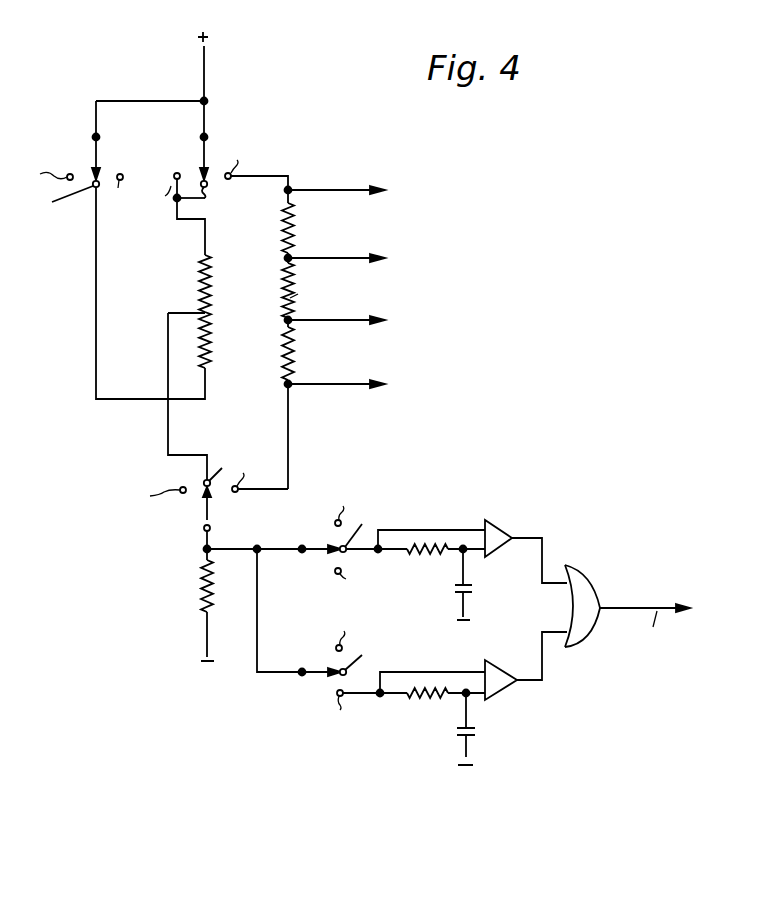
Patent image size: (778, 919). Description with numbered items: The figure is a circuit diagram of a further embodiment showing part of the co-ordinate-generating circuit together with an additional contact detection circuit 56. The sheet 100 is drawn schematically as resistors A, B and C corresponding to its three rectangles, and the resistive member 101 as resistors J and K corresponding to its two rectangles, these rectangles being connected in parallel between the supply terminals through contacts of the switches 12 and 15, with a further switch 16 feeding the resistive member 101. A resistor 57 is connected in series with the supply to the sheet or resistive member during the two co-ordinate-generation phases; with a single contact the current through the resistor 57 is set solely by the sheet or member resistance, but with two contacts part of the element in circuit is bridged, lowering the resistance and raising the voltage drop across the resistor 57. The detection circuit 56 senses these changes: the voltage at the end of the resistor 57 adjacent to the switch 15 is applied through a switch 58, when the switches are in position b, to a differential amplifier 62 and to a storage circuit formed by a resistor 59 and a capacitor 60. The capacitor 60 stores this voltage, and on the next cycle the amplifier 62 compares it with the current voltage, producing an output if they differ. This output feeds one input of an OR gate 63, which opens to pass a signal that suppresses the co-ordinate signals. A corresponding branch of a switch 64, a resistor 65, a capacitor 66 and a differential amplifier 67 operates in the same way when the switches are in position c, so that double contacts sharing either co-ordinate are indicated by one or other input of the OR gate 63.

The switch 12 is at (93, 145).
The selector switch 16 is at (203, 147).
The sheet 100 is at (290, 215).
The resistive member 101 is at (198, 270).
The switch 15 is at (203, 513).
The contact detection circuit 56 is at (247, 603).
The resistor 57 is at (202, 578).
The switch 58 is at (318, 548).
The resistor 59 is at (446, 554).
The capacitor 60 is at (470, 586).
The differential amplifier 62 is at (500, 526).
The OR gate 63 is at (592, 586).
The switch 64 is at (314, 677).
The resistor 65 is at (426, 702).
The capacitor 66 is at (476, 736).
The differential amplifier 67 is at (503, 688).